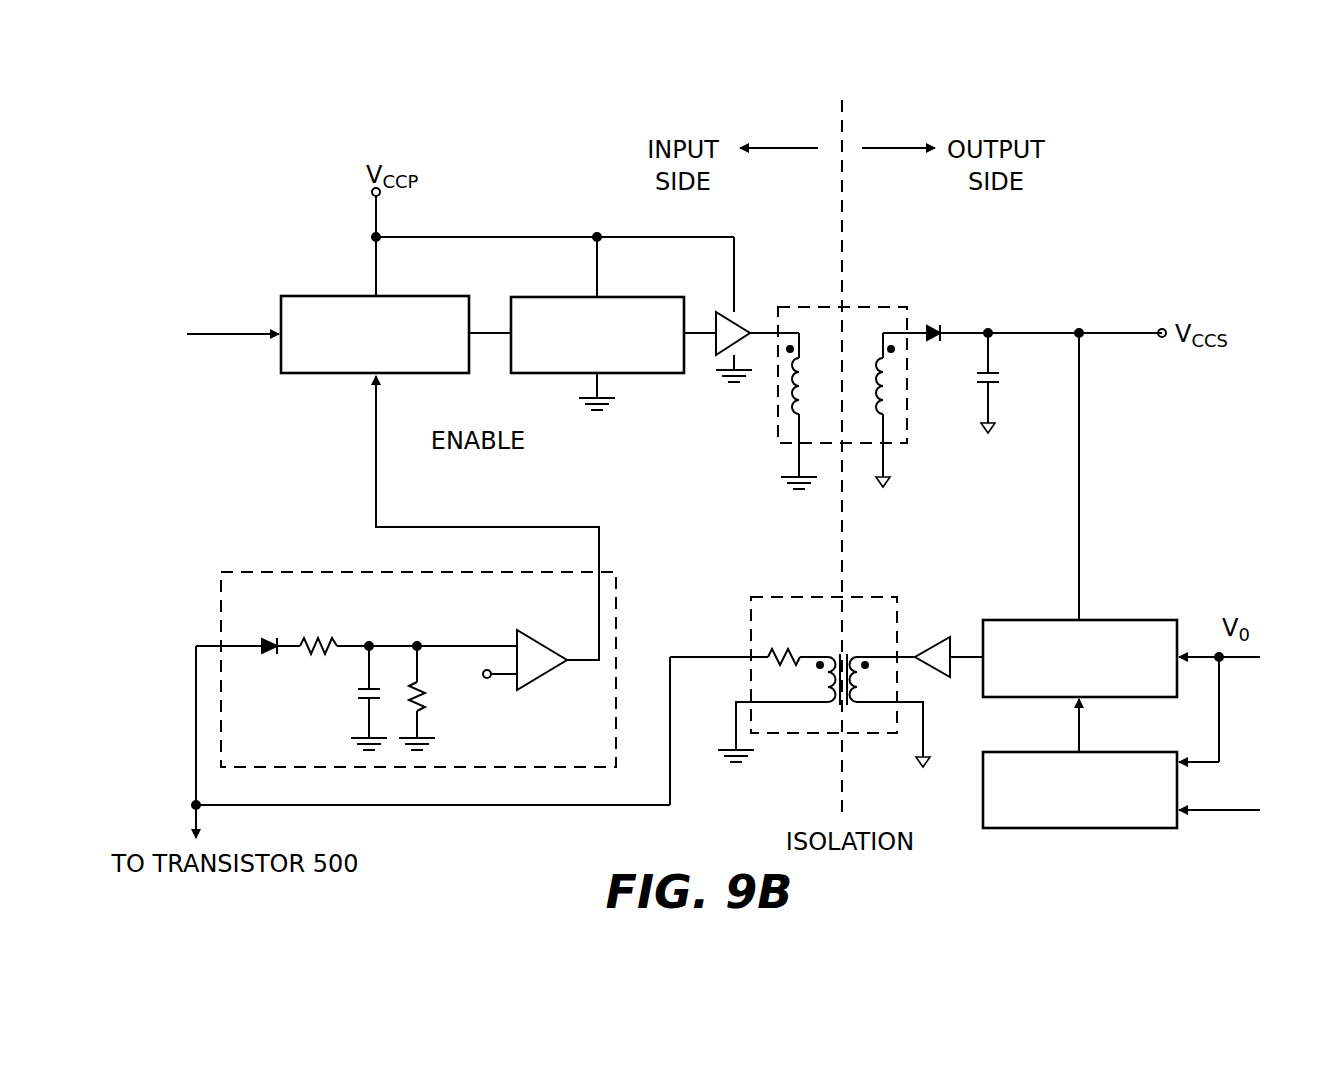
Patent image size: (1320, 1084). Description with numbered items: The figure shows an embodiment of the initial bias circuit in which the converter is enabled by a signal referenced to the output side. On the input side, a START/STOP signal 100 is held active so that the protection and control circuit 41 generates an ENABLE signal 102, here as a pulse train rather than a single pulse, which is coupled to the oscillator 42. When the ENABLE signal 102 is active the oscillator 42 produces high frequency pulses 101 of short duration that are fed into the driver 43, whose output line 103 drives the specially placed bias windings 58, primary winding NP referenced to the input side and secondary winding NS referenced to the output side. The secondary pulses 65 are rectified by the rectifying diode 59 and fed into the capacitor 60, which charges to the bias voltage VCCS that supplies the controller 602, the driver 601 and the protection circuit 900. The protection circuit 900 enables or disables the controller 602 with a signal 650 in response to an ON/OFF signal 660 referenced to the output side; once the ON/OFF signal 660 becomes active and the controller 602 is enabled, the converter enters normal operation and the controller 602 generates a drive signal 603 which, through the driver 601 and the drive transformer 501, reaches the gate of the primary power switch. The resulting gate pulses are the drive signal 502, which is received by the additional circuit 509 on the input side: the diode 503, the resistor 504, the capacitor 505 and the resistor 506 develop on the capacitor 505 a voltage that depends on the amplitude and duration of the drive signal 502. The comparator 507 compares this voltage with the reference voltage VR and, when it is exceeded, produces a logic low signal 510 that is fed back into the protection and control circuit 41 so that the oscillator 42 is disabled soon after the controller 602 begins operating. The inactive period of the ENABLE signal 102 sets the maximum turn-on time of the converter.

The protection and control circuit 41 is at (353, 296).
The oscillator 42 is at (549, 297).
The driver 43 is at (726, 310).
The bias windings 58 is at (880, 304).
The rectifying diode 59 is at (933, 323).
The capacitor 60 is at (993, 384).
The secondary winding pulse voltage 65 is at (915, 331).
The START/STOP signal 100 is at (240, 336).
The pulses 101 is at (707, 335).
The ENABLE signal 102 is at (490, 335).
The driver output line 103 is at (760, 325).
The drive transformer 501 is at (776, 596).
The drive signal 502 is at (216, 644).
The diode 503 is at (266, 638).
The resistor 504 is at (334, 645).
The capacitor 505 is at (364, 700).
The resistor 506 is at (421, 708).
The comparator 507 is at (545, 647).
The additional circuit 509 is at (620, 594).
The logic low signal 510 is at (602, 527).
The driver 601 is at (943, 637).
The controller 602 is at (1140, 620).
The drive signal 603 is at (966, 655).
The signal 650 is at (1079, 731).
The ON/OFF signal 660 is at (1232, 812).
The protection circuit 900 is at (1107, 829).